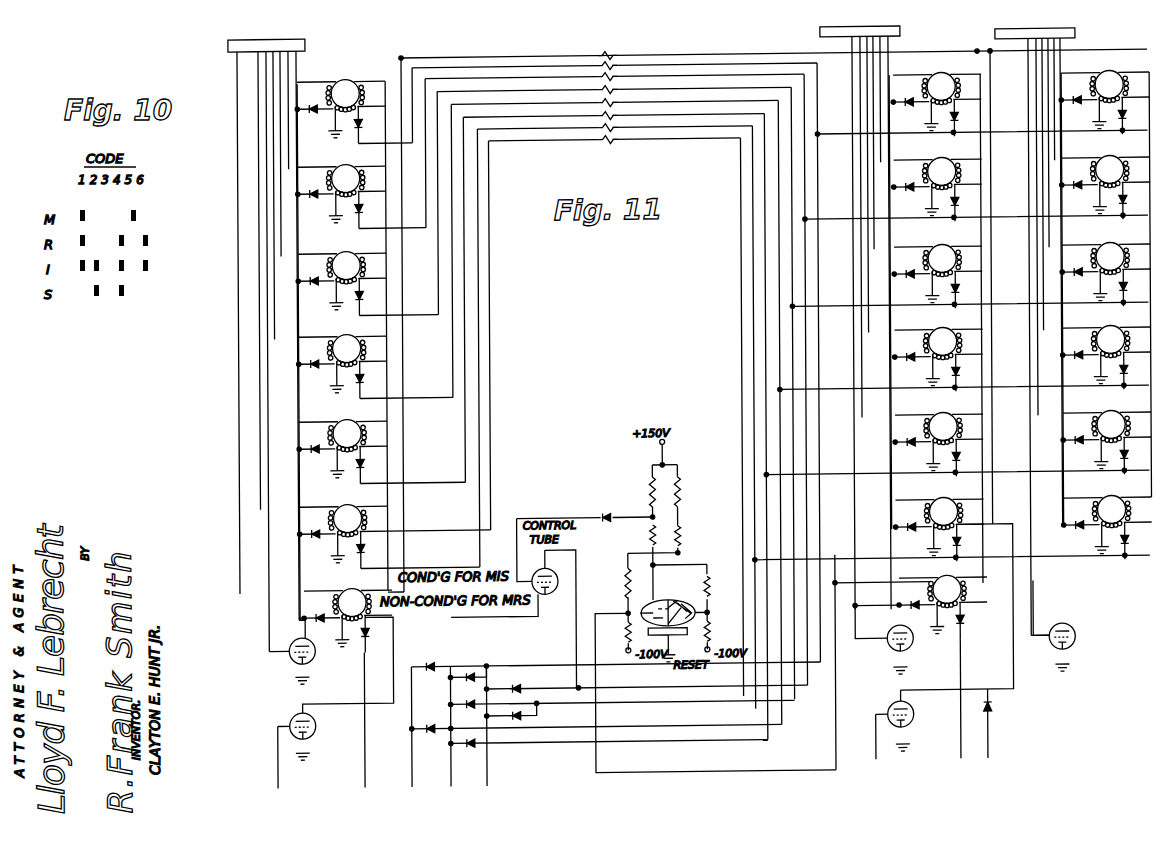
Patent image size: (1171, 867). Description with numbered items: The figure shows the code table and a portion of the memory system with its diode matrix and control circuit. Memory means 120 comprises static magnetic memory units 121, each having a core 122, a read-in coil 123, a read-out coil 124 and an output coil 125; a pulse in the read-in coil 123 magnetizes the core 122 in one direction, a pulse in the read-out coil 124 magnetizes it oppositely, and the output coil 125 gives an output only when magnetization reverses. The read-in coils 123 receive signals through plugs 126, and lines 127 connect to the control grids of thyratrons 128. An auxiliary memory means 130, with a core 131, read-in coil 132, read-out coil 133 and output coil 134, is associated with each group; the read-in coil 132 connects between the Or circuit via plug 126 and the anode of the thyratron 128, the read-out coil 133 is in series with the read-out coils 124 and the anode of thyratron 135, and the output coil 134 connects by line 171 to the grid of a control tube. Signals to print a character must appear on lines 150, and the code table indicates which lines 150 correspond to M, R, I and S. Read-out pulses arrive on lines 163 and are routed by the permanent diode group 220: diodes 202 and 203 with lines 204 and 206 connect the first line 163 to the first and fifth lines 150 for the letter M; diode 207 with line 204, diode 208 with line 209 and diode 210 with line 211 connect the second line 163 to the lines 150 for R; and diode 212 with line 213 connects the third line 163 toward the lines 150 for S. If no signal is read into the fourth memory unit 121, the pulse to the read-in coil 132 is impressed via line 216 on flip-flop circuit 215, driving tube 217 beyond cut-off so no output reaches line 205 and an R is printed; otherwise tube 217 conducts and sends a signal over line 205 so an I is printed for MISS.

The memory means 120 is at (232, 157).
The static magnetic memory unit 121 is at (950, 68).
The core 122 is at (367, 68).
The read-in coil 123 is at (331, 177).
The read-out coil 124 is at (950, 408).
The output coil 125 is at (352, 507).
The plug 126 is at (228, 40).
The line 127 is at (237, 532).
The thyratron 128 is at (290, 665).
The auxiliary memory means 130 is at (1017, 660).
The core 131 is at (365, 620).
The read-in coil 132 is at (291, 619).
The read-out coil 133 is at (368, 592).
The output coil 134 is at (355, 618).
The thyratron 135 is at (288, 717).
The line 150 is at (816, 139).
The line 163 is at (272, 763).
The line 171 is at (351, 774).
The diode 202 is at (438, 663).
The diode 203 is at (424, 726).
The line 204 is at (793, 434).
The line 205 is at (788, 351).
The line 206 is at (702, 596).
The diode 207 is at (470, 670).
The diode 208 is at (457, 702).
The line 209 is at (768, 501).
The diode 210 is at (466, 745).
The line 211 is at (704, 626).
The diode 212 is at (512, 688).
The line 213 is at (524, 719).
The flip-flop circuit 215 is at (674, 597).
The line 216 is at (741, 766).
The tube 217 is at (556, 570).
The permanent diode group 220 is at (484, 668).